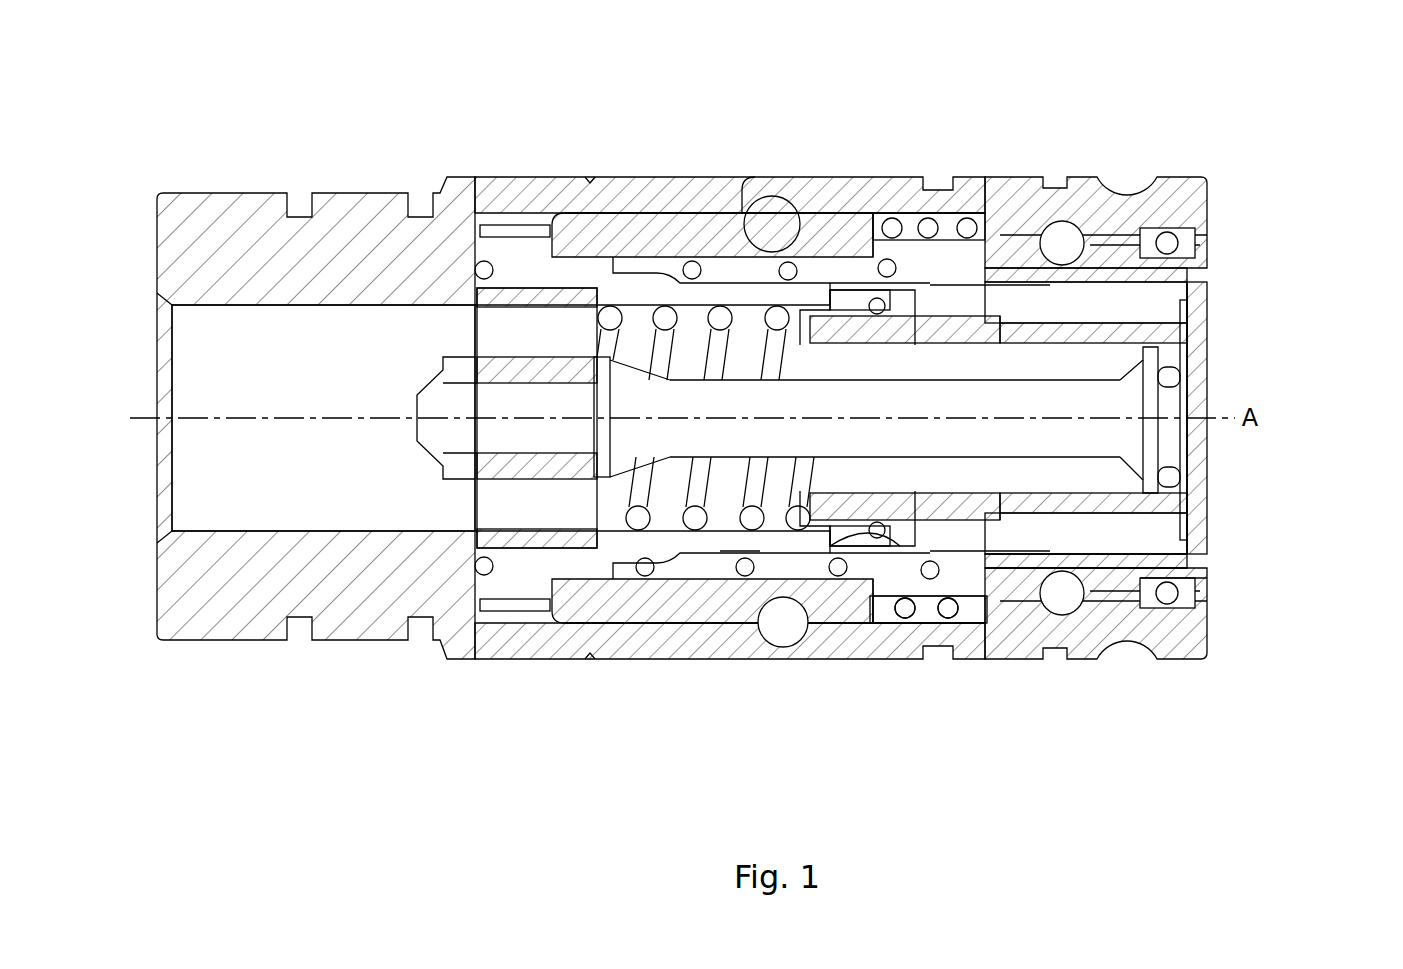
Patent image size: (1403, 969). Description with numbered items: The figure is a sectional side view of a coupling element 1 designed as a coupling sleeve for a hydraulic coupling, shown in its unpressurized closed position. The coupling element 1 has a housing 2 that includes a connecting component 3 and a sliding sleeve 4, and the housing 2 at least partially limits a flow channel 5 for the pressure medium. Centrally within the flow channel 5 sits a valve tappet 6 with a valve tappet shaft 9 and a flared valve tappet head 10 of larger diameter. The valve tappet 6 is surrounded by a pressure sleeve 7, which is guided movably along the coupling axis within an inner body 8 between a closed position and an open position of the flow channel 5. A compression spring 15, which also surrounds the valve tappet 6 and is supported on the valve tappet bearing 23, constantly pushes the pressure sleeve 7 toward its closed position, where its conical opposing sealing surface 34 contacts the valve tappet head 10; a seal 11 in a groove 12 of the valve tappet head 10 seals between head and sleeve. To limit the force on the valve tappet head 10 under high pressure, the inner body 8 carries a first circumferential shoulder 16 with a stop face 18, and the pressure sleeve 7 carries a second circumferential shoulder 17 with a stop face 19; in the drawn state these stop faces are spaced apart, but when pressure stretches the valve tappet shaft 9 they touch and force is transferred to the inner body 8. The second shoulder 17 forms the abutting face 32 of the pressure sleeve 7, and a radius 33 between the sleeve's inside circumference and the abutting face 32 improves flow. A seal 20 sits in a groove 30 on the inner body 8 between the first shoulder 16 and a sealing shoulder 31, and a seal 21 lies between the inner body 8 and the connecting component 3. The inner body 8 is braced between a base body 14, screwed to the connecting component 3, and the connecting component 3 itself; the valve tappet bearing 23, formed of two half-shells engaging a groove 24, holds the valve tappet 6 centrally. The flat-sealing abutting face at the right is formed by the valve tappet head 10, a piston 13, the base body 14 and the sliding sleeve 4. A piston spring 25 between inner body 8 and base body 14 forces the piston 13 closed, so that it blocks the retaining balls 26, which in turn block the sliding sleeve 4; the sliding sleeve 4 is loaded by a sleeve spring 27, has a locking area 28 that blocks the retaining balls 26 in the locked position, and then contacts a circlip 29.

The coupling element 1 is at (1180, 120).
The housing 2 is at (605, 688).
The connecting component 3 is at (244, 592).
The sliding sleeve 4 is at (1180, 198).
The flow channel 5 is at (272, 365).
The valve tappet 6 is at (703, 398).
The pressure sleeve 7 is at (1006, 330).
The inner body 8 is at (718, 296).
The valve tappet shaft 9 is at (908, 392).
The valve tappet head 10 is at (1207, 472).
The seal 11 is at (1170, 352).
The groove 12 is at (1165, 384).
The piston 13 is at (1195, 300).
The base body 14 is at (1193, 577).
The compression spring 15 is at (652, 527).
The first circumferential shoulder 16 is at (862, 300).
The second circumferential shoulder 17 is at (838, 316).
The stop face 18 is at (877, 540).
The stop face 19 is at (775, 527).
The seal 20 is at (925, 530).
The seal 21 is at (486, 262).
The valve tappet bearing 23 is at (538, 300).
The groove 24 is at (503, 458).
The piston spring 25 is at (755, 262).
The retaining balls 26 is at (1061, 252).
The sleeve spring 27 is at (1020, 553).
The locking area 28 is at (1012, 600).
The circlip 29 is at (1167, 598).
The groove 30 is at (903, 335).
The sealing shoulder 31 is at (950, 607).
The abutting face 32 is at (756, 597).
The radius 33 is at (805, 345).
The conical opposing sealing surface 34 is at (1183, 497).